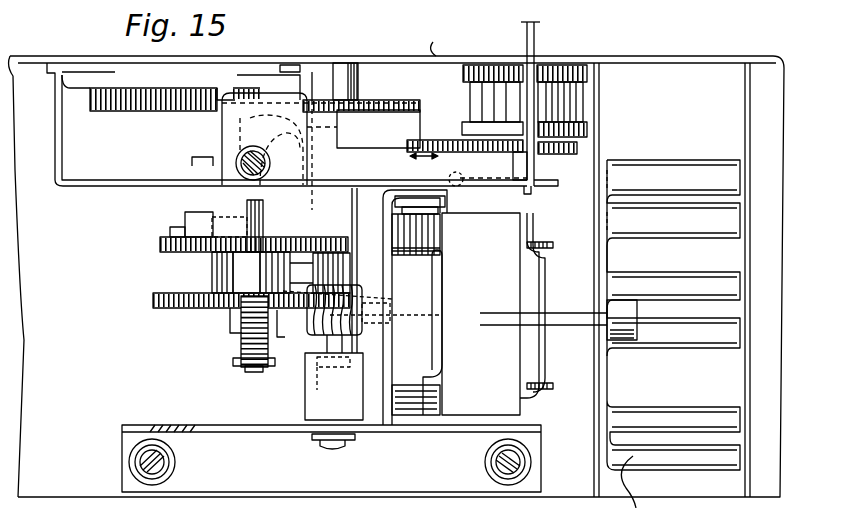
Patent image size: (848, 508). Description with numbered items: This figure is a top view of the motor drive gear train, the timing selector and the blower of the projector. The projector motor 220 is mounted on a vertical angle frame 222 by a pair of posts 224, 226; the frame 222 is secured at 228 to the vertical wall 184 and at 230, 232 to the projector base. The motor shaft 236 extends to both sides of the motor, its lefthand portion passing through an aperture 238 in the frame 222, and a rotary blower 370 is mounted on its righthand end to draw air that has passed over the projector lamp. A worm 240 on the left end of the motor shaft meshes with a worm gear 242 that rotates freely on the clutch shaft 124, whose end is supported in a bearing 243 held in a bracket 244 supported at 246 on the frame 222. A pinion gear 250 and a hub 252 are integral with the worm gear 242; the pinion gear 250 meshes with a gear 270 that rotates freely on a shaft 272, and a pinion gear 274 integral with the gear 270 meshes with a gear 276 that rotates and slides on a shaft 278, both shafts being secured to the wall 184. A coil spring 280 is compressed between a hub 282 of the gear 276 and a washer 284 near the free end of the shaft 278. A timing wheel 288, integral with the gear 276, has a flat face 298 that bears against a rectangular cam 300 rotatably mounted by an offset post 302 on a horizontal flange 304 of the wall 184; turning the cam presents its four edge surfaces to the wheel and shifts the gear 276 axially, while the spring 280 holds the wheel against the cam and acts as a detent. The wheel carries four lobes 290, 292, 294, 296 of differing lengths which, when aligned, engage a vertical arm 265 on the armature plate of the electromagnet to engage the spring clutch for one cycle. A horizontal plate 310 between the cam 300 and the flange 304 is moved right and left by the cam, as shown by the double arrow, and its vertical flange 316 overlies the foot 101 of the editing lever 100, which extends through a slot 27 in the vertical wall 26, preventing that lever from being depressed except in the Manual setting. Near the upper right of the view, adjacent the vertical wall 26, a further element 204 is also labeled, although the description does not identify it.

The vertical wall 26 is at (446, 43).
The slot 27 is at (527, 46).
The editing lever 100 is at (535, 39).
The foot 101 is at (528, 187).
The clutch shaft 124 is at (383, 350).
The vertical wall 184 is at (287, 124).
The gear unit 204 is at (600, 101).
The projector motor 220 is at (513, 397).
The vertical angle frame 222 is at (190, 425).
The post 224 is at (433, 228).
The post 226 is at (423, 392).
The securing point 228 is at (447, 204).
The securing point 230 is at (170, 464).
The securing point 232 is at (490, 462).
The motor shaft 236 is at (413, 310).
The aperture 238 is at (392, 298).
The worm 240 is at (318, 335).
The worm gear 242 is at (278, 312).
The bearing 243 is at (334, 386).
The bracket 244 is at (305, 409).
The support point 246 is at (338, 452).
The pinion gear 250 is at (357, 288).
The hub 252 is at (347, 270).
The vertical arm 265 is at (306, 210).
The gear 270 is at (160, 300).
The shaft 272 is at (232, 319).
The pinion gear 274 is at (212, 272).
The gear 276 is at (163, 248).
The shaft 278 is at (250, 371).
The coil spring 280 is at (243, 345).
The hub 282 is at (243, 273).
The washer 284 is at (235, 362).
The timing wheel 288 is at (185, 218).
The lobe 290 is at (172, 233).
The lobe 292 is at (247, 206).
The lobe 294 is at (349, 210).
The lobe 296 is at (222, 214).
The flat face 298 is at (165, 197).
The rectangular cam 300 is at (378, 129).
The post 302 is at (246, 154).
The horizontal flange 304 is at (203, 157).
The horizontal plate 310 is at (390, 148).
The vertical flange 316 is at (560, 178).
The rotary blower 370 is at (662, 163).